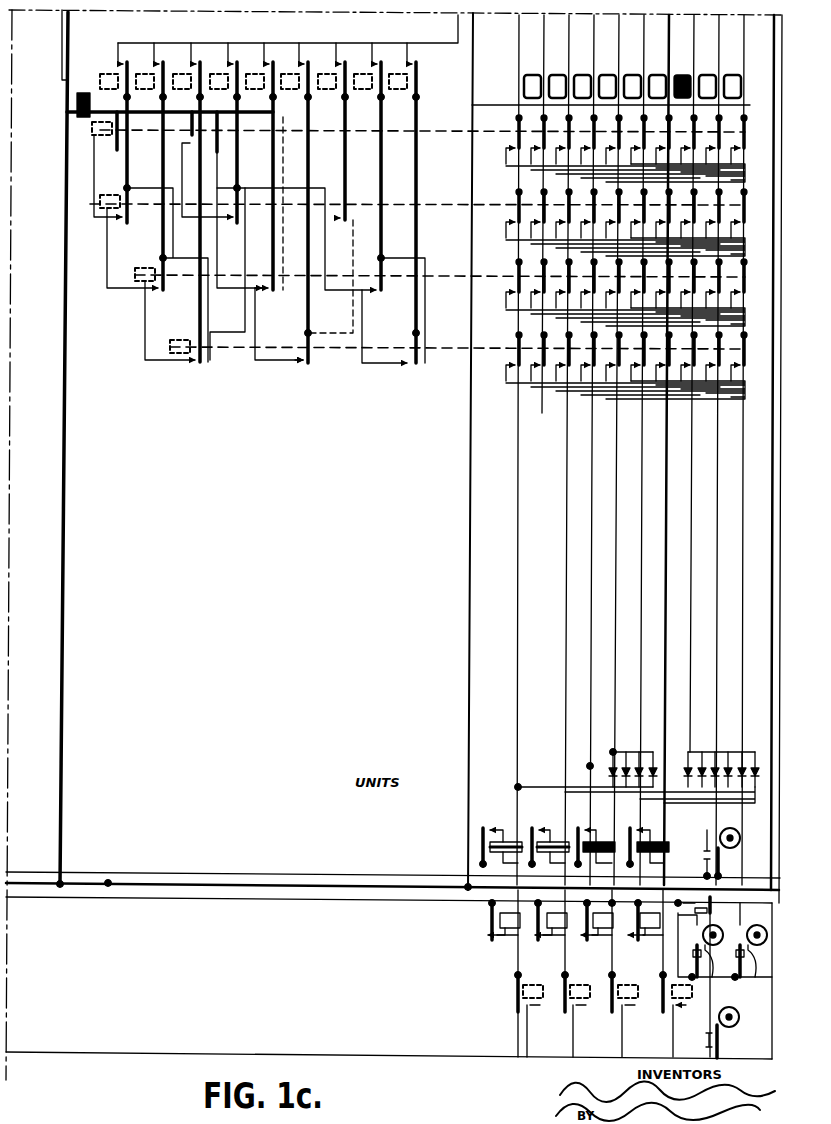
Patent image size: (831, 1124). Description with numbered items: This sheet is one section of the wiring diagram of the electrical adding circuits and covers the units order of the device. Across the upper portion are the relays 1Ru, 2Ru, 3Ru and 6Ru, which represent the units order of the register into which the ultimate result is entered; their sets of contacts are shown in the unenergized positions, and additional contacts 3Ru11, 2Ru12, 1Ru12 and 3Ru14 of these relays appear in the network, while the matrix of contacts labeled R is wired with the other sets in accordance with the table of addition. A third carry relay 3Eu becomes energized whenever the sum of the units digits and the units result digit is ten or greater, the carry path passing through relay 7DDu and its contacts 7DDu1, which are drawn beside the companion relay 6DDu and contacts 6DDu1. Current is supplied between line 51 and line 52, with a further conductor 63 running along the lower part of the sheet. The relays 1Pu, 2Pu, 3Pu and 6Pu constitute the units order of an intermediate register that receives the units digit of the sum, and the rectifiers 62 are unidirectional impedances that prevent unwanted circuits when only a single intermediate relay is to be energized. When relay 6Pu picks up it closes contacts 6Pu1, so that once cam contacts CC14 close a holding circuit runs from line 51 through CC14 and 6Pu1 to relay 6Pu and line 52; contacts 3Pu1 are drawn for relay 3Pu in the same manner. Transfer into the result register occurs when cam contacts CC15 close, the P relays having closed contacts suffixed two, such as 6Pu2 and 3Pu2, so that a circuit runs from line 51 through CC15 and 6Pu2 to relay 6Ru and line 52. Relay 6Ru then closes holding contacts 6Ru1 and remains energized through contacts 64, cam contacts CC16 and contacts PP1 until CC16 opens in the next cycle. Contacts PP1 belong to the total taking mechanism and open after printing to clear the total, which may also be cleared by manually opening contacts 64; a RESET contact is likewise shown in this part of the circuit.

The third carry relay 3Eu is at (85, 92).
The relay 6Ru is at (92, 130).
The relay 3Ru is at (100, 202).
The relay 2Ru is at (138, 282).
The relay 1Ru is at (170, 347).
The units decimal drive relay contact 6DDu1 is at (302, 64).
The contacts 7DDu1 is at (338, 66).
The units decimal drive relay 6DDu is at (292, 89).
The relay 7DDu is at (330, 89).
The relay contact 3Ru11 is at (340, 214).
The relay contact 2Ru12 is at (264, 296).
The relay contact 1Ru12 is at (303, 366).
The R set of contacts R is at (642, 226).
The line 51 is at (774, 478).
The line 52 is at (780, 553).
The rectifiers 62 is at (754, 766).
The conductor 63 is at (421, 875).
The contacts 64 is at (710, 889).
The relay 1Pu is at (495, 835).
The relay 2Pu is at (543, 835).
The relay 3Pu is at (592, 835).
The print relay contact 3Pu1 is at (583, 828).
The contacts 6Pu1 is at (634, 830).
The relay 6Pu is at (668, 847).
The cam contacts CC14 is at (716, 840).
The reset switch RESET is at (719, 905).
The relay contact 3Ru14 is at (593, 943).
The print relay contact 3Pu2 is at (610, 1005).
The holding contacts 6Ru1 is at (644, 942).
The contacts 6Pu2 is at (671, 1013).
The cam contacts CC16 is at (713, 961).
The cam contacts PP1 is at (751, 966).
The cam contacts CC15 is at (720, 1043).